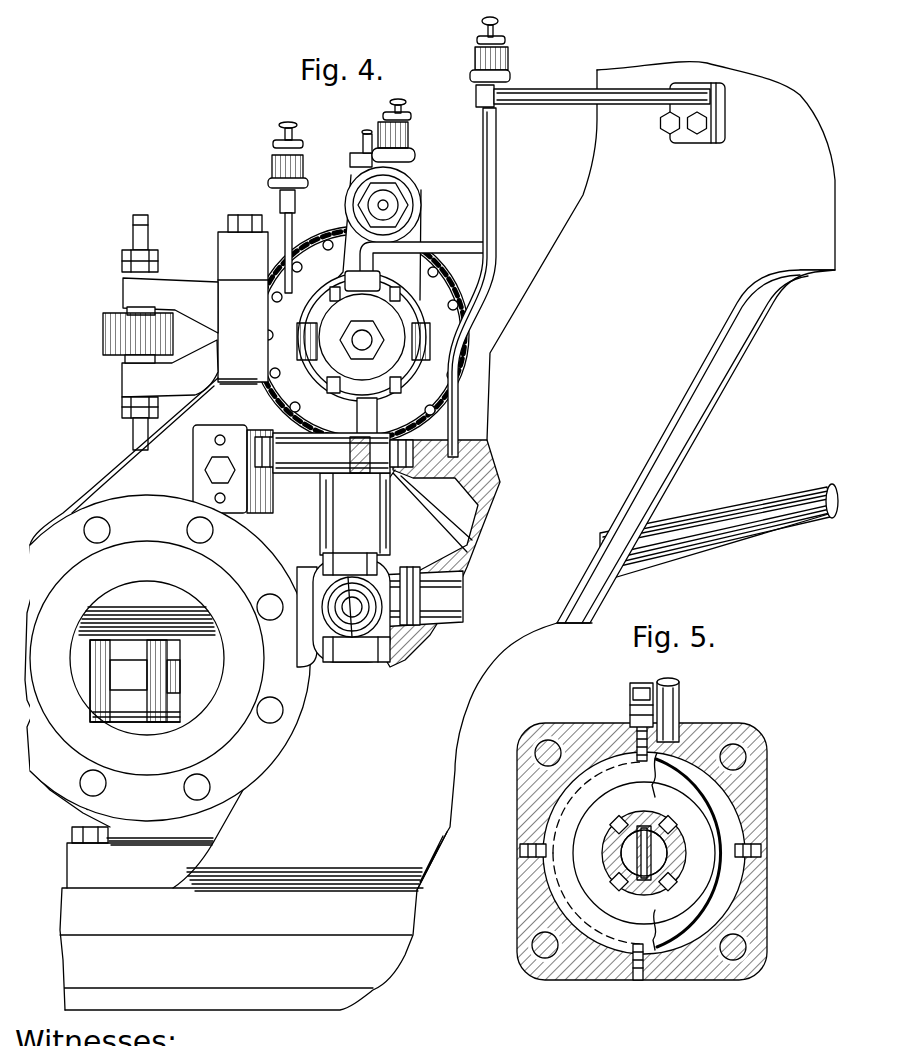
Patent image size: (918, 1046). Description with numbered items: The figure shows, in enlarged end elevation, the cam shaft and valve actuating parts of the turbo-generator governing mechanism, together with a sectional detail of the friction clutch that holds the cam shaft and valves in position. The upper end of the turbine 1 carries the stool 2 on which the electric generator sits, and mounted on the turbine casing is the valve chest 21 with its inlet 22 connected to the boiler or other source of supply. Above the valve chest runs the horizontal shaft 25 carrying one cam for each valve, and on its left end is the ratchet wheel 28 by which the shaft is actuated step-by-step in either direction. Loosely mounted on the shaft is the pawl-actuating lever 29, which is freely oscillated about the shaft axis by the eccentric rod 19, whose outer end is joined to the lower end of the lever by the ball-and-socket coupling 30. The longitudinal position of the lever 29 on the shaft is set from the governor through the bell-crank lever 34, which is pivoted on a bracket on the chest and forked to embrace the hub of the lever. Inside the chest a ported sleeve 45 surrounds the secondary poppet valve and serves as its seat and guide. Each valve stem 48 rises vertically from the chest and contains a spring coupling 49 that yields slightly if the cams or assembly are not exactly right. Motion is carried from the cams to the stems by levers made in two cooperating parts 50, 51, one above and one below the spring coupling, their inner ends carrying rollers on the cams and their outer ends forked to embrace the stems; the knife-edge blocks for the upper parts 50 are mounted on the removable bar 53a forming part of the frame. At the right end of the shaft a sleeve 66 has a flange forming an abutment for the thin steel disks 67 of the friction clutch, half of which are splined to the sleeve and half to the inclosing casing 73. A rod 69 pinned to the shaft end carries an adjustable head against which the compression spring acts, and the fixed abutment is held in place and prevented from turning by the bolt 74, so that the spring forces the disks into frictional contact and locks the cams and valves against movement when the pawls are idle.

In FIG. 4, the upper end of turbine 1 is at (280, 1000).
In FIG. 4, the stool 2 is at (451, 536).
In FIG. 4, the rod 19 is at (716, 522).
In FIG. 4, the valve chest 21 is at (97, 490).
In FIG. 4, the inlet 22 is at (203, 707).
In FIG. 4, the horizontal shaft 25 is at (363, 330).
In FIG. 5, the horizontal shaft 25 is at (625, 866).
In FIG. 4, the ratchet wheel 28 is at (449, 262).
In FIG. 4, the pawl-actuating lever 29 is at (352, 232).
In FIG. 4, the ball-and-socket coupling 30 is at (345, 672).
In FIG. 4, the bell-crank lever 34 is at (358, 470).
In FIG. 4, the sleeve 45 is at (177, 673).
In FIG. 4, the valve stem 48 is at (131, 440).
In FIG. 4, the spring coupling 49 is at (103, 333).
In FIG. 4, the upper lever part 50 is at (182, 290).
In FIG. 4, the lower lever part 51 is at (199, 356).
In FIG. 4, the removable bar 53a is at (223, 240).
In FIG. 5, the sleeve 66 is at (672, 851).
In FIG. 5, the thin steel disks 67 is at (730, 880).
In FIG. 5, the rod 69 is at (665, 862).
In FIG. 5, the inclosing casing 73 is at (578, 724).
In FIG. 5, the bolt 74 is at (632, 695).